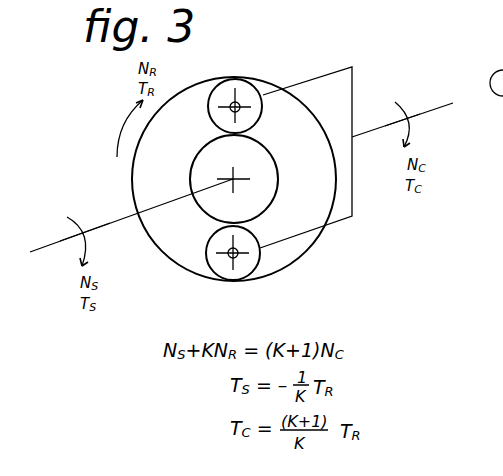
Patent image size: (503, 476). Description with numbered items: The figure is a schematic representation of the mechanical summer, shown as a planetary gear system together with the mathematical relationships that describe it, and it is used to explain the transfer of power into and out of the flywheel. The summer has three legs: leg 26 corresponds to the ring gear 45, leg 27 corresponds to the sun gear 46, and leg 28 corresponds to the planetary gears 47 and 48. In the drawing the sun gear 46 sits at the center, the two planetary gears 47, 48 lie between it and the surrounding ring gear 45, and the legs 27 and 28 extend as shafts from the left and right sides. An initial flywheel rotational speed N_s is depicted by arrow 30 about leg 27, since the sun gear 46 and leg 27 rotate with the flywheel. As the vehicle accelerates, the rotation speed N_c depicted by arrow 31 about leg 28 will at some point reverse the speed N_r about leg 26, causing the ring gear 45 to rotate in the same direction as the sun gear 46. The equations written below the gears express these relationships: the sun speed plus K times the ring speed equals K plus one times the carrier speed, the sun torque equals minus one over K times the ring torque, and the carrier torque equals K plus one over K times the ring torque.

The leg 26 is at (203, 82).
The planetary gear 48 is at (262, 90).
The planetary gear 47 is at (257, 264).
The sun gear 46 is at (203, 212).
The ring gear 45 is at (310, 250).
The leg 27 is at (36, 247).
The arrow 30 is at (82, 233).
The leg 28 is at (370, 130).
The arrow 31 is at (400, 118).